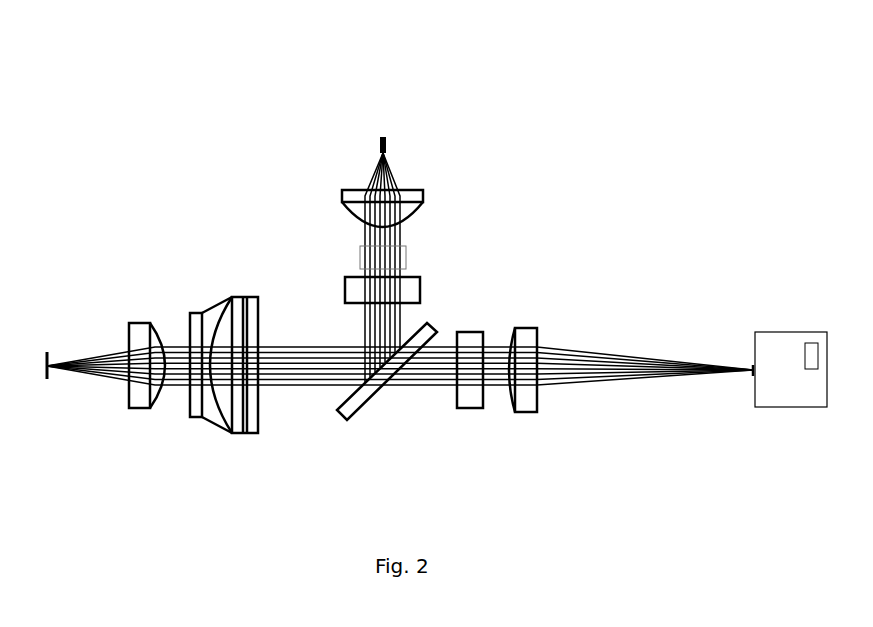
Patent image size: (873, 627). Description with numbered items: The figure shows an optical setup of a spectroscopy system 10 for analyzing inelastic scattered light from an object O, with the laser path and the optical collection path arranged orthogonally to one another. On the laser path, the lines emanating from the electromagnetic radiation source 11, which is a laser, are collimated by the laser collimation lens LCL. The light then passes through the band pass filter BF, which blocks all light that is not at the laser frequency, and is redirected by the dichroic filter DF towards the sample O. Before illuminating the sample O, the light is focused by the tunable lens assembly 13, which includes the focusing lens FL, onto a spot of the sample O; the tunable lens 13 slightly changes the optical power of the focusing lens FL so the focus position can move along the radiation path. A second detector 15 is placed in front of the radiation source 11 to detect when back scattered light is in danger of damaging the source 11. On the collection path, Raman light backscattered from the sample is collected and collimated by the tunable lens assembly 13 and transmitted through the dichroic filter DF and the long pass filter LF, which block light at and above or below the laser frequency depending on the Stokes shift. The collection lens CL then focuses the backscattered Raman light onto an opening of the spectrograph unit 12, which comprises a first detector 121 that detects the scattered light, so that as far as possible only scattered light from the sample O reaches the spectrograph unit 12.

The spectroscopy system 10 is at (116, 94).
The electromagnetic radiation source 11 is at (386, 140).
The spectrograph unit 12 is at (797, 405).
The first detector 121 is at (808, 342).
The tunable lens 13 is at (223, 410).
The second detector 15 is at (406, 256).
The object O is at (53, 380).
The focusing lens FL is at (137, 387).
The dichroic filter DF is at (353, 400).
The long pass filter LF is at (473, 410).
The collection lens CL is at (540, 405).
The laser collimation lens LCL is at (423, 193).
The band pass filter BF is at (421, 283).